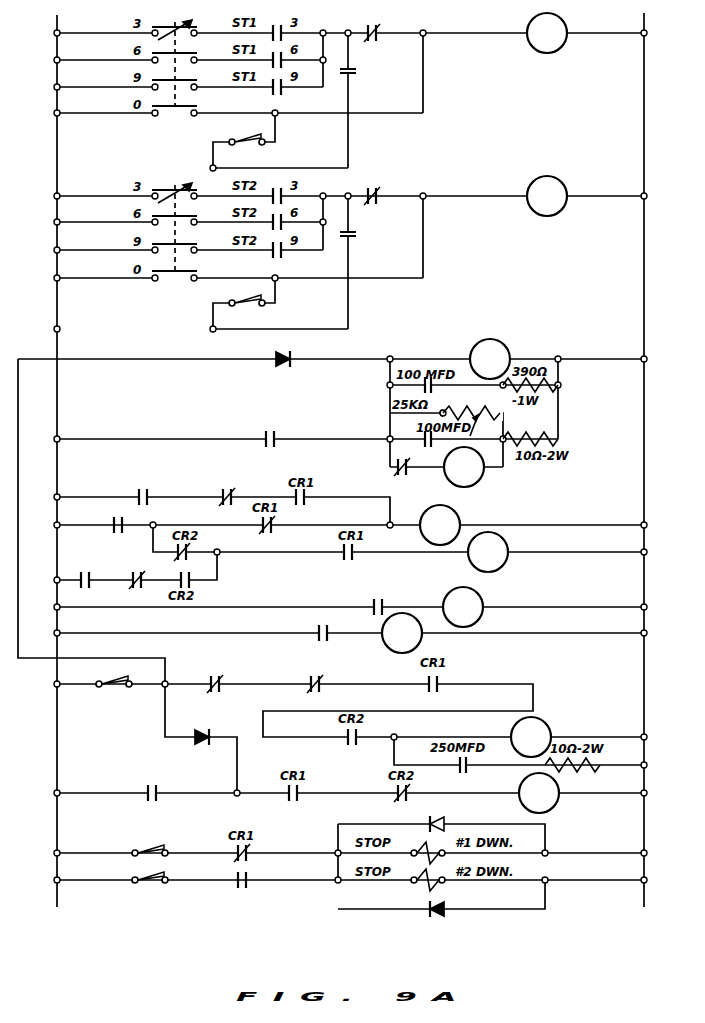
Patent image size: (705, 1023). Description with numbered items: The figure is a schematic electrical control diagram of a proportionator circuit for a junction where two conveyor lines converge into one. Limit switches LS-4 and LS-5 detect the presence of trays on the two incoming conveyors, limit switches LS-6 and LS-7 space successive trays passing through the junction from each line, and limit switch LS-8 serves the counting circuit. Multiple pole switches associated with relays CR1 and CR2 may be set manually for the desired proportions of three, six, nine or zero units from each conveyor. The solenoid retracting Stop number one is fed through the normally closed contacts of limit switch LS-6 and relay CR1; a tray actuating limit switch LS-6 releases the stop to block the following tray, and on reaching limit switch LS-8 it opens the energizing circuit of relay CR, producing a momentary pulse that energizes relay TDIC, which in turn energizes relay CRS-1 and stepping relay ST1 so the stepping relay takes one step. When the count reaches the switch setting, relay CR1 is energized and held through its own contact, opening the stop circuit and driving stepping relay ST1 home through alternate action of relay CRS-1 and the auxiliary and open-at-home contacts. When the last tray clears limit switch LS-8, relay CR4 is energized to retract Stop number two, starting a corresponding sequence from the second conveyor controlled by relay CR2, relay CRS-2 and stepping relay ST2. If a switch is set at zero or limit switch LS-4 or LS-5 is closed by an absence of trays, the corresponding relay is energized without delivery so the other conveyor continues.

The relay CR1 is at (453, 45).
The relay CR2 is at (453, 208).
The relay CR4 is at (348, 837).
The relay CR is at (384, 415).
The relay TD1C TDIC is at (290, 491).
The relay CRS-1 is at (409, 561).
The relay CRS-2 is at (405, 587).
The stepping relay ST1 is at (303, 579).
The stepping relay ST2 is at (243, 624).
The limit switch LS4 LS-4 is at (243, 133).
The limit switch LS5 LS-5 is at (243, 294).
The limit switch LS6 LS-6 is at (148, 842).
The limit switch LS7 LS-7 is at (148, 871).
The limit switch LS8 LS-8 is at (112, 674).